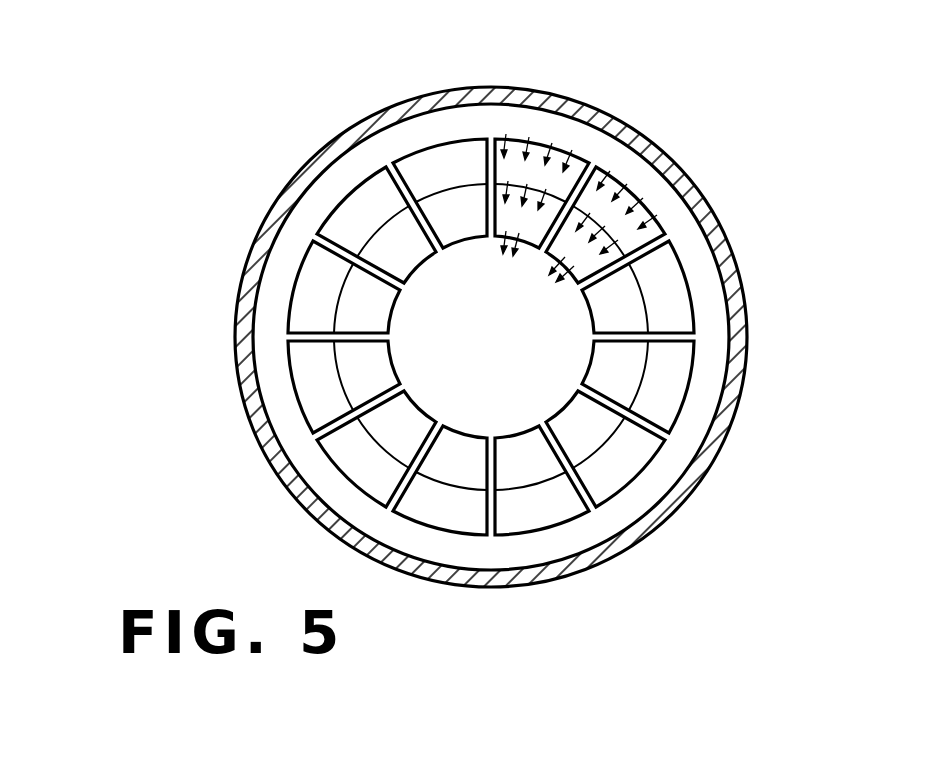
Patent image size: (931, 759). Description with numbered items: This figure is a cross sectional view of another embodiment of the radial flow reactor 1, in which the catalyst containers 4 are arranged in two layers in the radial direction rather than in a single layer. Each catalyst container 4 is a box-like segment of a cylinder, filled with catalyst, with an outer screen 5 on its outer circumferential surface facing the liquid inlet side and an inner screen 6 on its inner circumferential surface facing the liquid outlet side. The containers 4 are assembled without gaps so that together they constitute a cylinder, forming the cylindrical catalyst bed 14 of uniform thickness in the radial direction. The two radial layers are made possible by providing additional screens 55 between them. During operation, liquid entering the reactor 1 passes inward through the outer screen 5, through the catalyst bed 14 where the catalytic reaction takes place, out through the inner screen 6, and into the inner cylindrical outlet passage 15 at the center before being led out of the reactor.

The radial flow reactor 1 is at (660, 157).
The catalyst container 4 is at (363, 150).
The outer screen 5 is at (690, 393).
The inner screen 6 is at (583, 358).
The cylindrical catalyst bed 14 is at (387, 250).
The inner cylindrical outlet passage 15 is at (447, 378).
The additional screens 55 is at (647, 372).